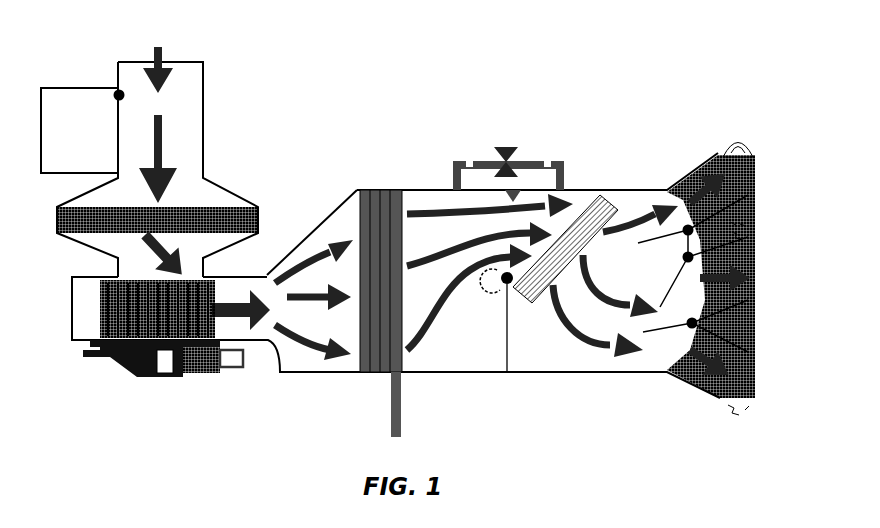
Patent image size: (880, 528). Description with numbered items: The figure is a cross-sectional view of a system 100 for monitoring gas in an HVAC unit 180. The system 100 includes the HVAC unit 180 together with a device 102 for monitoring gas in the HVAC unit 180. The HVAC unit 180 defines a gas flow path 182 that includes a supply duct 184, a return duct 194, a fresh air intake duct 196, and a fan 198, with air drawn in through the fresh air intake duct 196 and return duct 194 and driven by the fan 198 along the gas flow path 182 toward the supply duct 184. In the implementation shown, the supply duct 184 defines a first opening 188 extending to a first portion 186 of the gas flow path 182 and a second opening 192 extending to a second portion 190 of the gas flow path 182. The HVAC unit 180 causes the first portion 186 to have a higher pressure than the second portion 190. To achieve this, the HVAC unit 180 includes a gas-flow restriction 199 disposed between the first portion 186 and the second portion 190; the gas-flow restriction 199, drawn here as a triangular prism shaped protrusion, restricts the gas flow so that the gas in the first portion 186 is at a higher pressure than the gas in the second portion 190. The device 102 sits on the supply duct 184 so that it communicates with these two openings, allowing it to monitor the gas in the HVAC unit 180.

The system 100 is at (623, 63).
The device 102 is at (507, 128).
The HVAC unit 180 is at (276, 379).
The gas flow path 182 is at (165, 129).
The supply duct 184 is at (388, 190).
The first portion 186 is at (448, 330).
The first opening 188 is at (451, 190).
The second portion 190 is at (586, 190).
The second opening 192 is at (578, 198).
The return duct 194 is at (88, 88).
The fresh air intake duct 196 is at (203, 62).
The fan 198 is at (125, 357).
The gas-flow restriction 199 is at (513, 198).